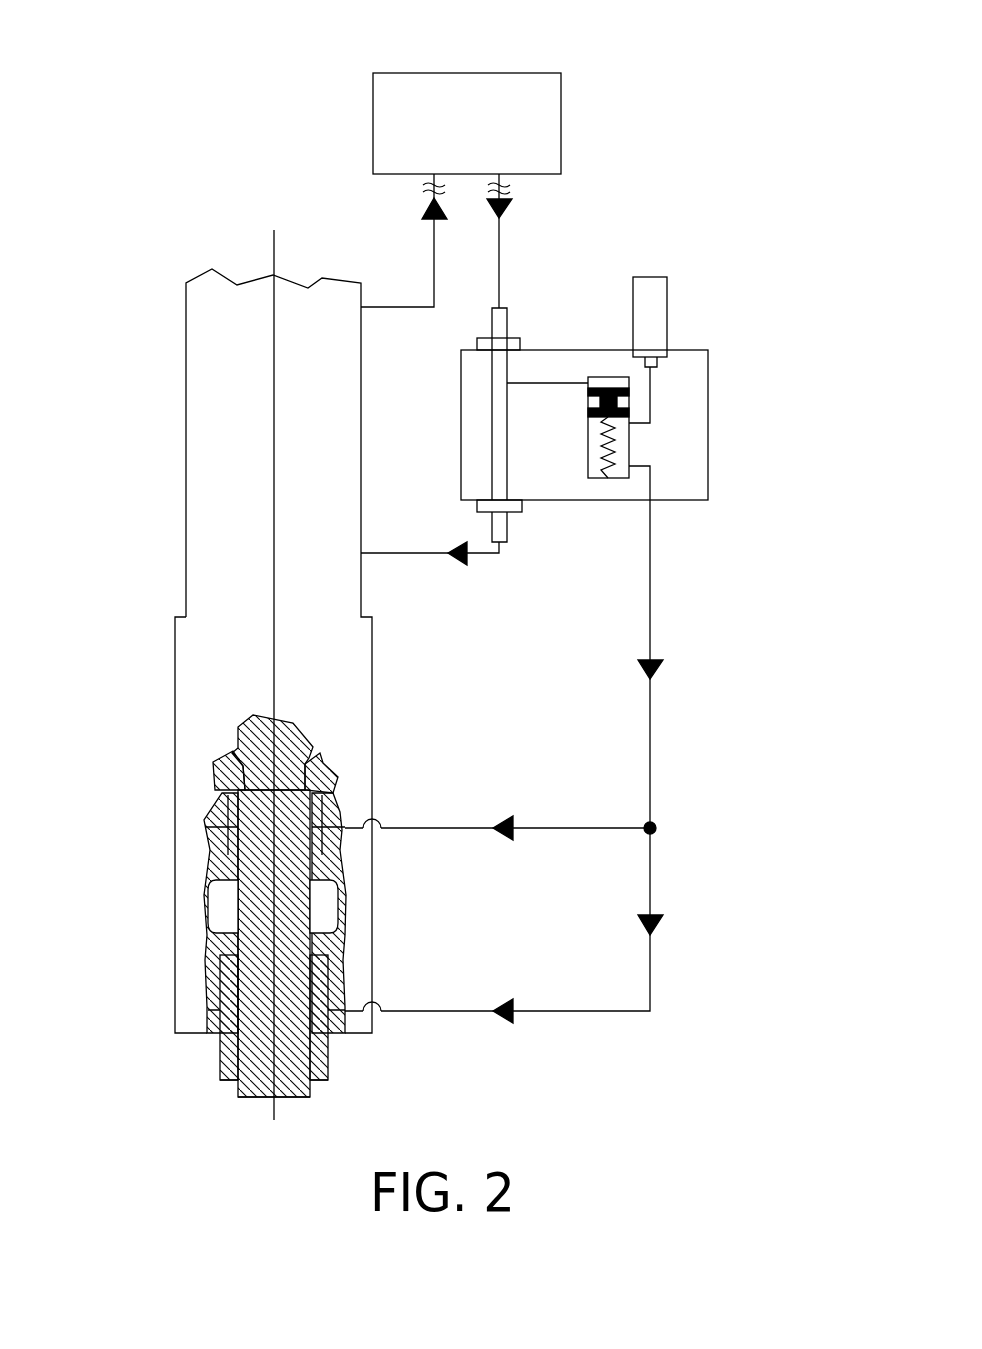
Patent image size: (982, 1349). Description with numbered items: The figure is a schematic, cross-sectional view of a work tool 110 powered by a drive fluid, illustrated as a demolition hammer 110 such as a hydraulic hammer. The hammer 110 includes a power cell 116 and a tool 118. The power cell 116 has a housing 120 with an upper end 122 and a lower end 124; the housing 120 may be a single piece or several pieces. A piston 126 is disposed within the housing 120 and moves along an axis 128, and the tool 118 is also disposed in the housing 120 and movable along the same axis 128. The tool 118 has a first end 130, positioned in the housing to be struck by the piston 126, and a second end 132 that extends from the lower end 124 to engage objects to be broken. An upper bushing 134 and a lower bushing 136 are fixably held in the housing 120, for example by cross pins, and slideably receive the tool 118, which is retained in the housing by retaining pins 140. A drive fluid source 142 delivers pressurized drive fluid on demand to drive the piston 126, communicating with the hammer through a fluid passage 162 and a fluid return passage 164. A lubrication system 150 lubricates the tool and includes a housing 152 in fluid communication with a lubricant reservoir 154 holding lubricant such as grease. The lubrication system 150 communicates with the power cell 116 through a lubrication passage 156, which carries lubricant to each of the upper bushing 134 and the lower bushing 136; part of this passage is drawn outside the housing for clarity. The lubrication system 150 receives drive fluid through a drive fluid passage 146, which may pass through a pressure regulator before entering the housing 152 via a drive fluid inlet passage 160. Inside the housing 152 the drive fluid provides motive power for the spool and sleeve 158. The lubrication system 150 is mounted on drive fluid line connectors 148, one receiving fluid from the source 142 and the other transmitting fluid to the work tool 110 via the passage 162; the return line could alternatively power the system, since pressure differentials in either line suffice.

The work tool 110 is at (264, 78).
The power cell 116 is at (163, 437).
The tool 118 is at (247, 1077).
The housing 120 is at (208, 835).
The upper end 122 is at (167, 277).
The lower end 124 is at (158, 1003).
The piston 126 is at (252, 733).
The axis 128 is at (273, 250).
The first end 130 is at (242, 793).
The second end 132 is at (247, 1100).
The upper bushing 134 is at (225, 855).
The lower bushing 136 is at (220, 973).
The retaining pins 140 is at (340, 897).
The drive fluid source 142 is at (443, 131).
The drive fluid passage 146 is at (500, 238).
The drive fluid line connectors 148 is at (507, 322).
The lubrication system 150 is at (656, 218).
The housing 152 is at (708, 380).
The lubricant reservoir 154 is at (667, 310).
The lubrication passage 156 is at (650, 565).
The spool and sleeve 158 is at (628, 443).
The drive fluid inlet passage 160 is at (557, 382).
The fluid passage 162 is at (418, 555).
The fluid return passage 164 is at (434, 260).